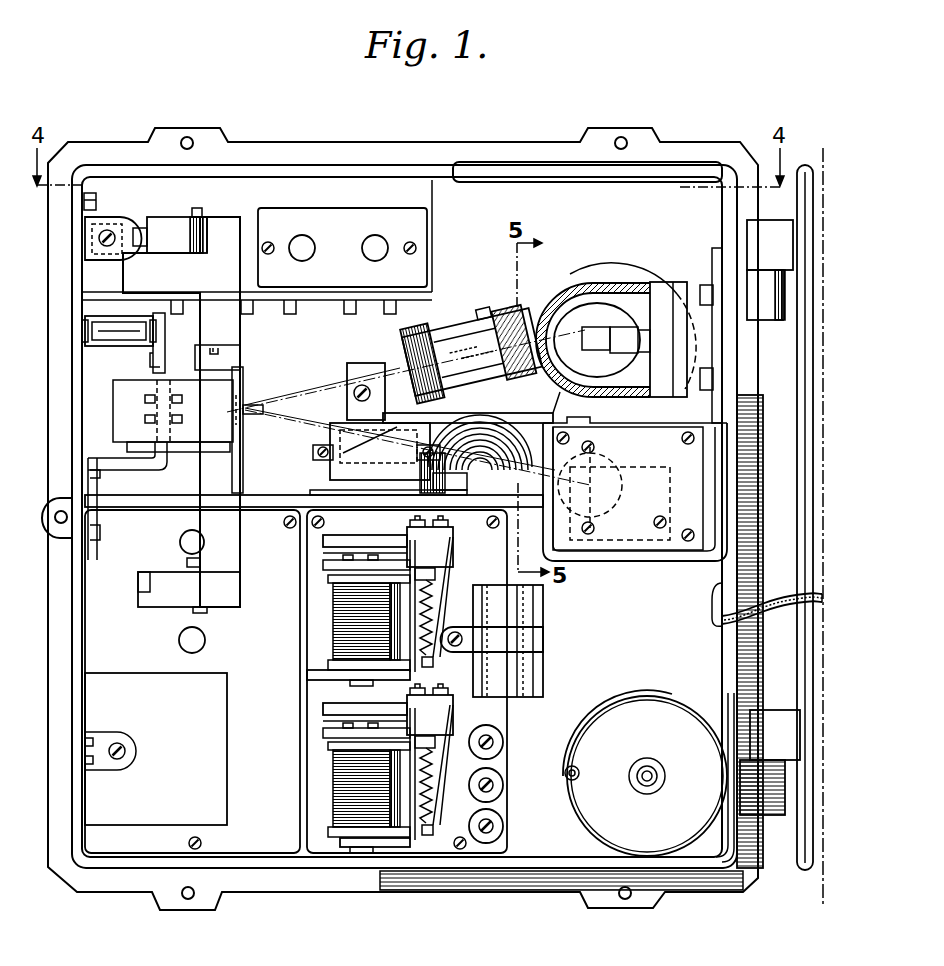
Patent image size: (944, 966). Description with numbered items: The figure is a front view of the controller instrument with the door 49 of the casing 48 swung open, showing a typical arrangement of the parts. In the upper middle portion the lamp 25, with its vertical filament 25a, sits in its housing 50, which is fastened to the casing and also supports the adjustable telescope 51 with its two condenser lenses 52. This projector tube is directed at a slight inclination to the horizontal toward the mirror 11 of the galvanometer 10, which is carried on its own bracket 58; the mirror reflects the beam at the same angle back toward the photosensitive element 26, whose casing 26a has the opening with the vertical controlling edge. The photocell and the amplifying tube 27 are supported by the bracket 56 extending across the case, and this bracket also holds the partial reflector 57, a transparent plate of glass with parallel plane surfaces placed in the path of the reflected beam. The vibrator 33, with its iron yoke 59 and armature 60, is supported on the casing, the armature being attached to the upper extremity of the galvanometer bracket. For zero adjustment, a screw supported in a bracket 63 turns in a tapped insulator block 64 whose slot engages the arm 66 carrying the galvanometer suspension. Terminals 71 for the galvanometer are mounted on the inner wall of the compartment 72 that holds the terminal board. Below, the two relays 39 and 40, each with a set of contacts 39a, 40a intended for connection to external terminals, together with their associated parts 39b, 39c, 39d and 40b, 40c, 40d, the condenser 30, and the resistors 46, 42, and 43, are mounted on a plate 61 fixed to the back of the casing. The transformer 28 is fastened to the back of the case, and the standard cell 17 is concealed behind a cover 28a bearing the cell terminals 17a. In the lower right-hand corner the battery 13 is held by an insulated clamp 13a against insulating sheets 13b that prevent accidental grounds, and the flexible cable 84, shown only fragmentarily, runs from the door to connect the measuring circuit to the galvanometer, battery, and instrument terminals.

The galvanometer 10 is at (250, 363).
The mirror 11 is at (247, 384).
The battery 13 is at (680, 715).
The insulated clamp 13a is at (598, 729).
The insulating sheets 13b is at (726, 717).
The standard cell 17 is at (277, 835).
The cell terminals 17a is at (181, 546).
The lamp 25 is at (583, 305).
The vertical filament 25a is at (590, 330).
The photosensitive element 26 is at (615, 515).
The photocell casing 26a is at (595, 545).
The amplifying tube 27 is at (652, 263).
The transformer 28 is at (448, 327).
The cover plate 28a is at (210, 773).
The condenser 30 is at (520, 673).
The vibrator 33 is at (130, 338).
The relay 39 is at (377, 599).
The set of contacts 39a is at (325, 568).
The relay spring 39b is at (433, 613).
The relay contact 39c is at (432, 667).
The relay contact 39d is at (428, 583).
The relay 40 is at (384, 762).
The set of contacts 40a is at (320, 733).
The relay spring 40b is at (433, 772).
The relay contact 40c is at (430, 830).
The relay contact 40d is at (428, 747).
The resistor 42 is at (505, 788).
The resistor 43 is at (505, 829).
The resistor 46 is at (505, 745).
The casing 48 is at (490, 880).
The door 49 is at (813, 860).
The lamp housing 50 is at (558, 293).
The telescope 51 is at (442, 350).
The condenser lenses 52 is at (500, 327).
The bracket 56 is at (690, 562).
The partial reflector 57 is at (323, 467).
The galvanometer bracket 58 is at (143, 472).
The iron yoke 59 is at (100, 316).
The armature 60 is at (160, 313).
The plate 61 is at (320, 680).
The bracket 63 is at (107, 216).
The tapped insulator block 64 is at (134, 226).
The arm 66 is at (148, 222).
The galvanometer terminals 71 is at (362, 247).
The compartment 72 is at (418, 188).
The flexible cable 84 is at (775, 593).